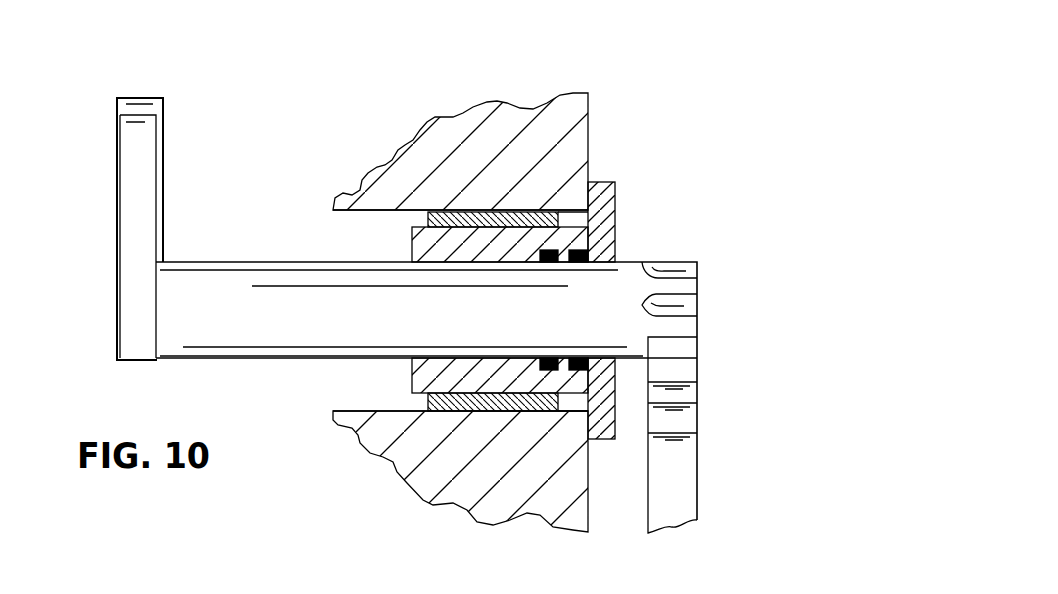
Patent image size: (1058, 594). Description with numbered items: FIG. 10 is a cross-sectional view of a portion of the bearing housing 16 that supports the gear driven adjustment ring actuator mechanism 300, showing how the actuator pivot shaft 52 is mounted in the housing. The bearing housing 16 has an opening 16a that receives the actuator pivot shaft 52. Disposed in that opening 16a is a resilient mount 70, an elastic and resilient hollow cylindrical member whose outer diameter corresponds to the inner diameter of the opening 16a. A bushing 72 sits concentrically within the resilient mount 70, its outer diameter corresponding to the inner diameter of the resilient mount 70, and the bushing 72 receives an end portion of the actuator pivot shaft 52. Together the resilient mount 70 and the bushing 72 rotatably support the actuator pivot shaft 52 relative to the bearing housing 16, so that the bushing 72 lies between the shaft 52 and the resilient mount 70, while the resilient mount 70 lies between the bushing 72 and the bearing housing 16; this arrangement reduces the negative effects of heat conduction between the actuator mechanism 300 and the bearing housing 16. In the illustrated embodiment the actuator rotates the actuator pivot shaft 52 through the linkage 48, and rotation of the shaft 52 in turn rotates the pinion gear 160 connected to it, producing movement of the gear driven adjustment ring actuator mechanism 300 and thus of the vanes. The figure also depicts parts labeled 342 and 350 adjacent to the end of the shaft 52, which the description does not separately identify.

The gear driven adjustment ring actuator mechanism 300 is at (742, 86).
The linkage 48 is at (110, 200).
The actuator pivot shaft 52 is at (229, 262).
The bearing housing 16 is at (426, 143).
The opening 16a is at (348, 211).
The resilient mount 70 is at (515, 213).
The bushing 72 is at (616, 208).
The pinion gear 160 is at (688, 287).
The collar 342 is at (706, 368).
The sleeve 350 is at (672, 487).